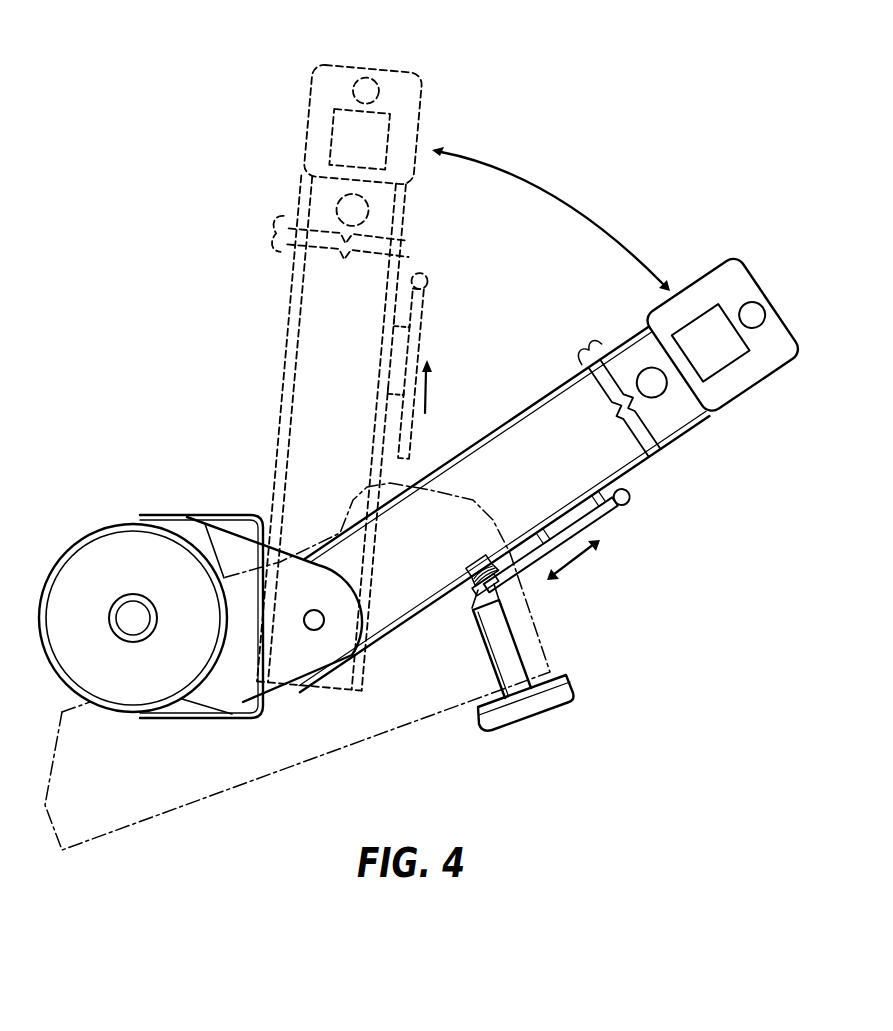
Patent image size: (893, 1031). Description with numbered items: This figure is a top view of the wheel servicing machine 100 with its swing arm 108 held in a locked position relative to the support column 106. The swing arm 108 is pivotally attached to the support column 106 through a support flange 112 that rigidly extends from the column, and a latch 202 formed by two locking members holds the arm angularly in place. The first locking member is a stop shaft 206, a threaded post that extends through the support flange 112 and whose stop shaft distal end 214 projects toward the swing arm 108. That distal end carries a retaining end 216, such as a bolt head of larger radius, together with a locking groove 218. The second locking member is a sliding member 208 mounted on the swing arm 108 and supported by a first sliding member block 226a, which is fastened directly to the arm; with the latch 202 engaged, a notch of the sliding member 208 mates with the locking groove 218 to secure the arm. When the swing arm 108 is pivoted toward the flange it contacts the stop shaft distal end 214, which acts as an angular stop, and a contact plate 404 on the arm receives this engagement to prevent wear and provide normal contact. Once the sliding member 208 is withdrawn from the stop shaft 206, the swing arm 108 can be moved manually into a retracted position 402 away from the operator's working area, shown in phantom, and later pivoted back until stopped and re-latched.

The wheel servicing machine 100 is at (140, 179).
The support column 106 is at (95, 530).
The swing arm 108 is at (630, 333).
The support flange 112 is at (53, 825).
The latch 202 is at (584, 671).
The stop shaft 206 is at (525, 718).
The sliding member 208 is at (620, 521).
The stop shaft distal end 214 is at (467, 600).
The retaining end 216 is at (470, 569).
The locking groove 218 is at (503, 593).
The first sliding member block 226a is at (627, 492).
The retracted position 402 is at (303, 123).
The contact plate 404 is at (492, 566).